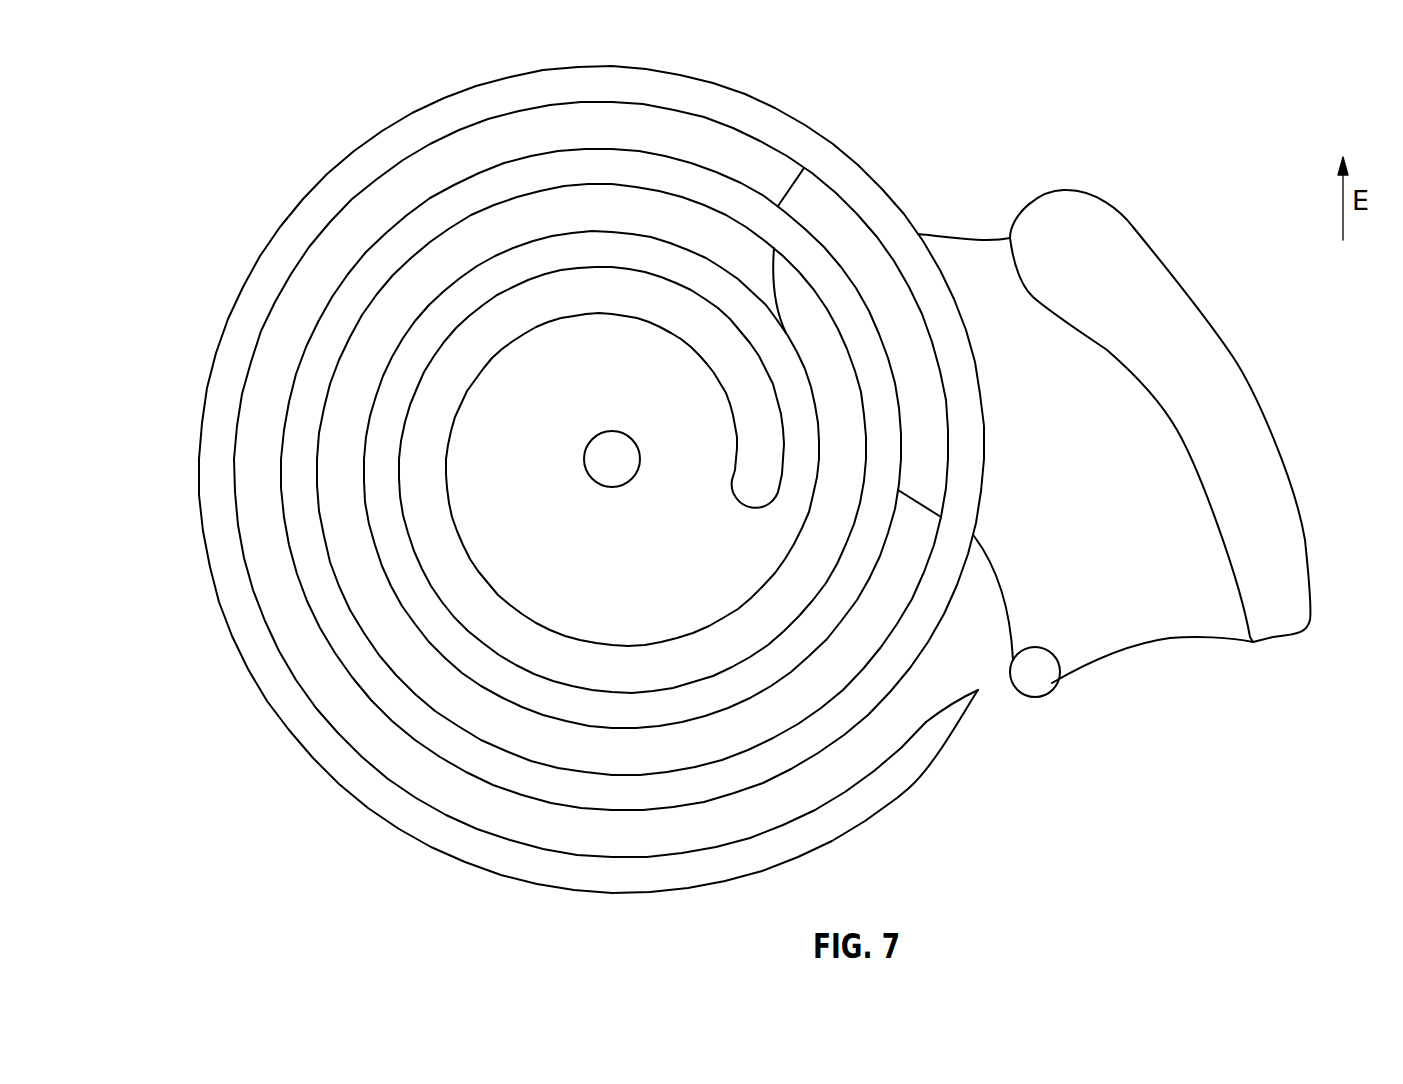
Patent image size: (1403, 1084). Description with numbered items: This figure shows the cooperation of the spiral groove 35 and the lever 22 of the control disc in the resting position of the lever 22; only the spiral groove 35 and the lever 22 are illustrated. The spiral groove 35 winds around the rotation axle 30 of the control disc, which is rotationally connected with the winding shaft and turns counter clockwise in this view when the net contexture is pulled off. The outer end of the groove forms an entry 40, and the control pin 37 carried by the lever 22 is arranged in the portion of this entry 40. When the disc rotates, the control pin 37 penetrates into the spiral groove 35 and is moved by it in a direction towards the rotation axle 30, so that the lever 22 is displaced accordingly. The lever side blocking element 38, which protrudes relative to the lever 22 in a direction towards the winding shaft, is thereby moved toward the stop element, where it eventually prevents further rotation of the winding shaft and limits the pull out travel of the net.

The lever 22 is at (1085, 530).
The rotation axle 30 is at (760, 265).
The spiral groove 35 is at (558, 479).
The control pin 37 is at (1066, 770).
The blocking element 38 is at (1190, 505).
The entry 40 is at (963, 731).